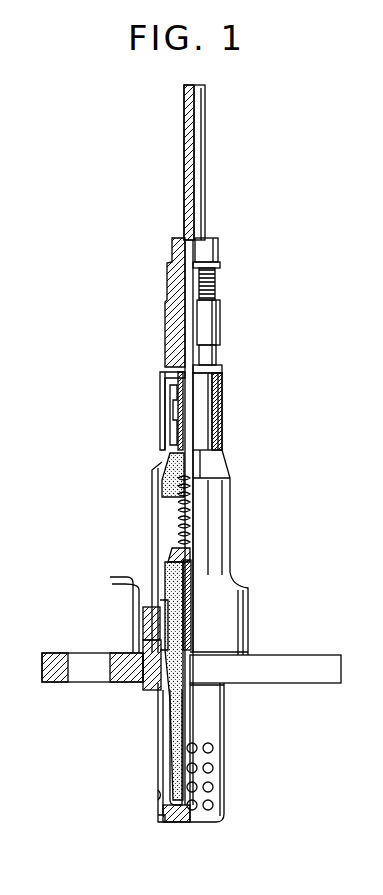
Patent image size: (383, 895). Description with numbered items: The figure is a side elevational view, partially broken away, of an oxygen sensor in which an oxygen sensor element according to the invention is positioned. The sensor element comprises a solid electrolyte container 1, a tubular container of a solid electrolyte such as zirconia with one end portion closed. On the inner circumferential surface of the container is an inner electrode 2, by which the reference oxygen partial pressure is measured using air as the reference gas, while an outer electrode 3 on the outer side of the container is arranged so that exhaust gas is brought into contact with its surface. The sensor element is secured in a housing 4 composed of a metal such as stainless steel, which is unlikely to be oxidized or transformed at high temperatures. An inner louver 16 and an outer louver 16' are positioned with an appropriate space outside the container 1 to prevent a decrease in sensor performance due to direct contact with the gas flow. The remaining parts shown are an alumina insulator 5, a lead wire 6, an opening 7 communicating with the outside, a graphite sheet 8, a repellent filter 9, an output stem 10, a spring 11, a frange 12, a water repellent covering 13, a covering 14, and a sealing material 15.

The solid electrolyte container 1 is at (163, 713).
The inner electrode 2 is at (180, 823).
The outer electrode 3 is at (172, 758).
The housing 4 is at (150, 686).
The alumina insulator 5 is at (170, 462).
The lead wire 6 is at (185, 384).
The opening 7 is at (178, 410).
The graphite sheet 8 is at (182, 592).
The repellent filter 9 is at (193, 412).
The output stem 10 is at (175, 556).
The spring 11 is at (190, 510).
The frange 12 is at (58, 655).
The water repellent covering 13 is at (112, 580).
The covering 14 is at (160, 468).
The sealing material 15 is at (172, 252).
The inner louver 16 is at (132, 830).
The outer louver 16' is at (115, 795).